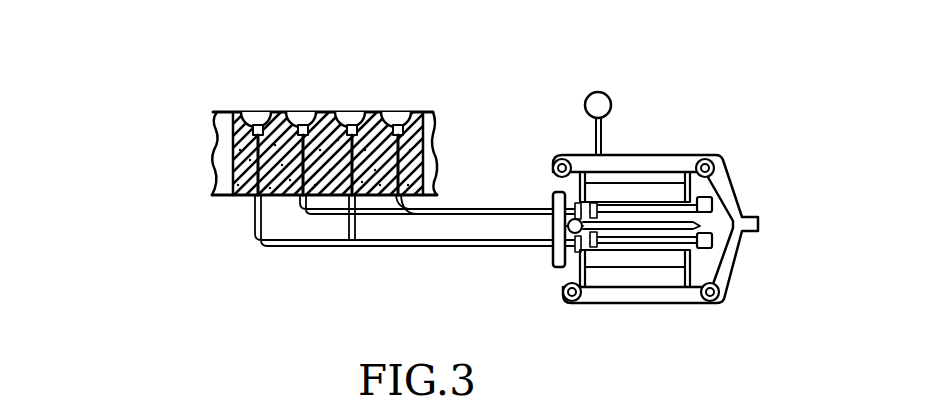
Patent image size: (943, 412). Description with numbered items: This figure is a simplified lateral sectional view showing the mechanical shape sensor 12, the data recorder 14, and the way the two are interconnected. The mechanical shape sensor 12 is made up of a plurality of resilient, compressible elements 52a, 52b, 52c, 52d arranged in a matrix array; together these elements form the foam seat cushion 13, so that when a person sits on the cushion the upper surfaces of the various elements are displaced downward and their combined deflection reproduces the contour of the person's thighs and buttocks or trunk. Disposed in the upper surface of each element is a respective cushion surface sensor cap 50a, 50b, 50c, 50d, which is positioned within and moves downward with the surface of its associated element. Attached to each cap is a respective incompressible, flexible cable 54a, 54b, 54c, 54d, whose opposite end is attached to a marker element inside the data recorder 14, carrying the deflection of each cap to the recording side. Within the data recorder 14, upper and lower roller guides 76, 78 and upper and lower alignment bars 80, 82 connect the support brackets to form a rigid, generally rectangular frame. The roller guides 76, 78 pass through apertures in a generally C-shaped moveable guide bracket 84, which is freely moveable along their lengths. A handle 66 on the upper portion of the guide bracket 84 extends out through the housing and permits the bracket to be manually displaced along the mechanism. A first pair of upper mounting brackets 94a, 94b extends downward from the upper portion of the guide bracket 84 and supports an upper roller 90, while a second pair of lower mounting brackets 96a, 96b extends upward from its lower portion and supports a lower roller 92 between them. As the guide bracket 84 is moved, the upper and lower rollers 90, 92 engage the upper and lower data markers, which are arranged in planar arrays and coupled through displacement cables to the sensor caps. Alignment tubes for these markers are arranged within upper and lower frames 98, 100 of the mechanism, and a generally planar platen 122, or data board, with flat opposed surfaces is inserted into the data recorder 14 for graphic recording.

The mechanical shape sensor 12 is at (180, 158).
The foam seat cushion 13 is at (217, 105).
The data recorder 14 is at (699, 94).
The cushion surface sensor cap 50a is at (253, 114).
The cushion surface sensor cap 50b is at (300, 114).
The cushion surface sensor cap 50c is at (356, 112).
The cushion surface sensor cap 50d is at (398, 112).
The resilient, compressible element 52a is at (236, 180).
The resilient, compressible element 52b is at (286, 118).
The resilient, compressible element 52c is at (334, 112).
The resilient, compressible element 52d is at (420, 133).
The incompressible, flexible cable 54a is at (295, 248).
The incompressible, flexible cable 54b is at (342, 249).
The incompressible, flexible cable 54c is at (412, 247).
The incompressible, flexible cable 54d is at (463, 247).
The handle 66 is at (603, 100).
The upper roller guide 76 is at (556, 158).
The lower roller guide 78 is at (563, 301).
The upper alignment bar 80 is at (713, 160).
The lower alignment bar 82 is at (720, 292).
The moveable guide bracket 84 is at (690, 154).
The upper roller 90 is at (628, 193).
The lower roller 92 is at (643, 258).
The upper mounting bracket 94a is at (580, 184).
The upper mounting bracket 94b is at (690, 187).
The lower mounting bracket 96a is at (589, 282).
The lower mounting bracket 96b is at (686, 282).
The upper frame 98 is at (713, 204).
The lower frame 100 is at (713, 244).
The platen 122 is at (702, 223).